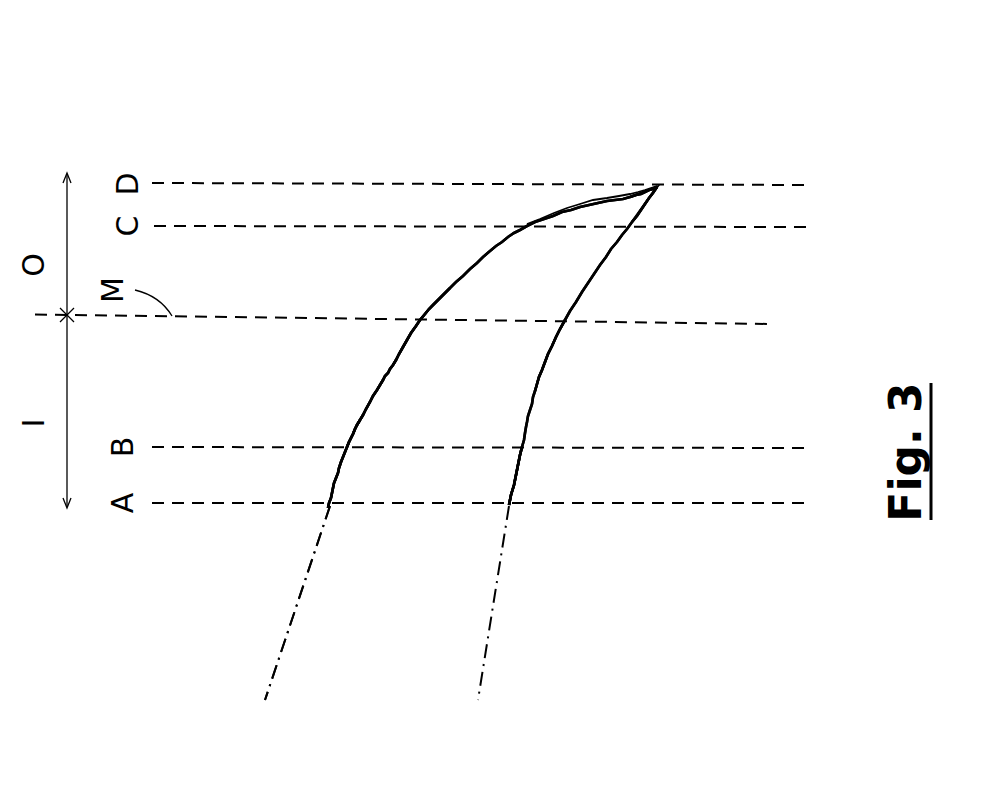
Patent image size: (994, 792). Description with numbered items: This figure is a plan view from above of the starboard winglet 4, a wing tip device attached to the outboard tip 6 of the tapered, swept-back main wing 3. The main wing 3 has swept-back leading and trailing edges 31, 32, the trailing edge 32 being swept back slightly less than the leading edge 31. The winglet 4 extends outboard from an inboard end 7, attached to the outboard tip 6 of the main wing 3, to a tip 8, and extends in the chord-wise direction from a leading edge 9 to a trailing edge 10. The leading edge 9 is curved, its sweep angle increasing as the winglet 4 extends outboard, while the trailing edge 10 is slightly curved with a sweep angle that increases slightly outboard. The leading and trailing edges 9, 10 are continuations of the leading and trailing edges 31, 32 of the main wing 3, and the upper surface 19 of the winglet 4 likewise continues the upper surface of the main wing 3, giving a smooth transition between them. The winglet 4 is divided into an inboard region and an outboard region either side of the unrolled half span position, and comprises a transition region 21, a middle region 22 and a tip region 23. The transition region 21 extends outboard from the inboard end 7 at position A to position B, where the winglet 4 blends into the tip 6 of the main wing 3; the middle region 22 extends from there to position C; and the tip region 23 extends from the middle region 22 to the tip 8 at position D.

The main wing 3 is at (305, 652).
The winglet 4 is at (266, 127).
The outboard tip 6 is at (492, 507).
The inboard end 7 is at (492, 507).
The tip 8 is at (657, 184).
The leading edge 9 is at (350, 436).
The trailing edge 10 is at (527, 440).
The upper surface 19 is at (532, 372).
The transition region 21 is at (357, 472).
The middle region 22 is at (420, 380).
The tip region 23 is at (597, 212).
The leading edge 31 is at (300, 600).
The trailing edge 32 is at (487, 650).